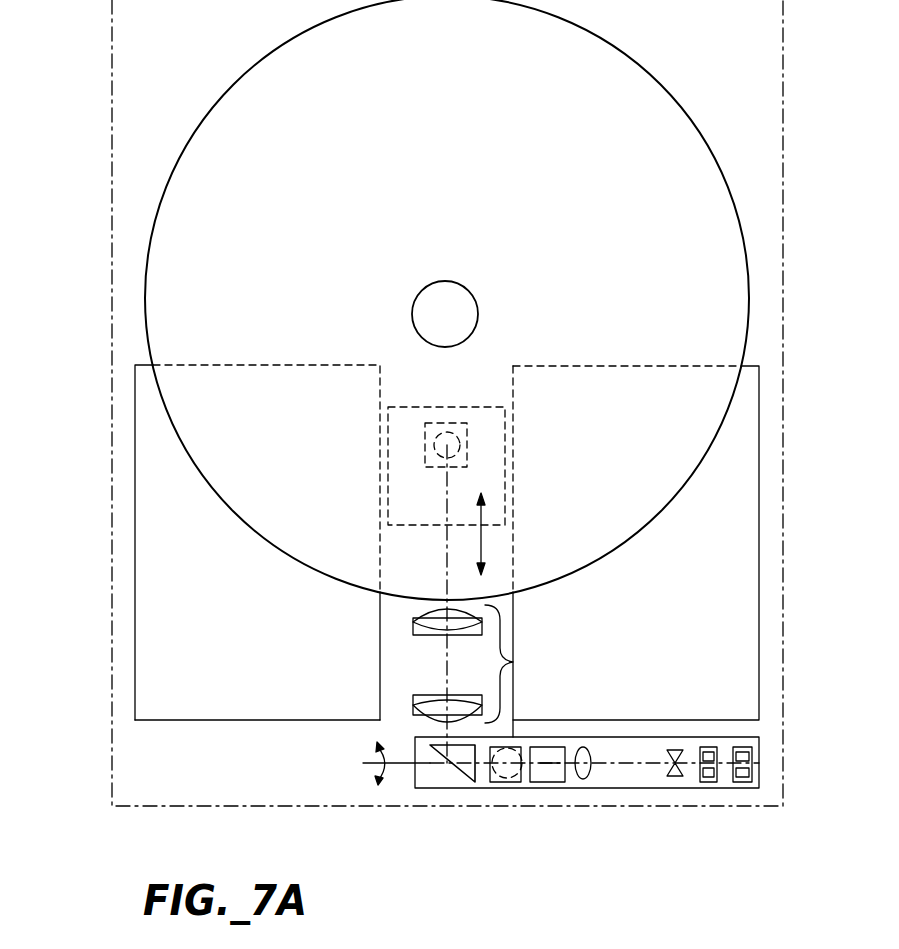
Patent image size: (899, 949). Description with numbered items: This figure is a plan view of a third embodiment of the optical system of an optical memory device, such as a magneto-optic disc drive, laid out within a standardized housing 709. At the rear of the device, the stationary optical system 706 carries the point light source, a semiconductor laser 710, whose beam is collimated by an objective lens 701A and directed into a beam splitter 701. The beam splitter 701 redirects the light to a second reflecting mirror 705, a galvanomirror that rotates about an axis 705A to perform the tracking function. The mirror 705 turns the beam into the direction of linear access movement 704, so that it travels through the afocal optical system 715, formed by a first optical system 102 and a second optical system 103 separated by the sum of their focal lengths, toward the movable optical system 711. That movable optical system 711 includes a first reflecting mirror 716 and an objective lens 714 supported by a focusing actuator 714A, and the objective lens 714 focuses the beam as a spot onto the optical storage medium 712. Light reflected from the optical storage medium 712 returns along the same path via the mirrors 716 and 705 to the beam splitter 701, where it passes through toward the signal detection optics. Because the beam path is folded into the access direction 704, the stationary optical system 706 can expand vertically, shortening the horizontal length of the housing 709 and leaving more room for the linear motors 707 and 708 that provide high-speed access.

The optical storage medium 712 is at (630, 55).
The movable optical system 711 is at (485, 405).
The first reflecting mirror 716 is at (432, 422).
The objective lens 714 is at (460, 452).
The focusing actuator 714A is at (513, 478).
The direction of linear access movement 704 is at (481, 553).
The linear motor 708 is at (759, 512).
The housing 709 is at (112, 525).
The linear motor 707 is at (137, 577).
The second optical system 103 is at (413, 625).
The first optical system 102 is at (413, 705).
The afocal optical system 715 is at (513, 662).
The beam splitter 701 is at (521, 737).
The axis 705A is at (375, 762).
The second reflecting mirror 705 is at (432, 750).
The semiconductor laser 710 is at (505, 782).
The objective lens 701A is at (521, 788).
The stationary optical system 706 is at (627, 788).